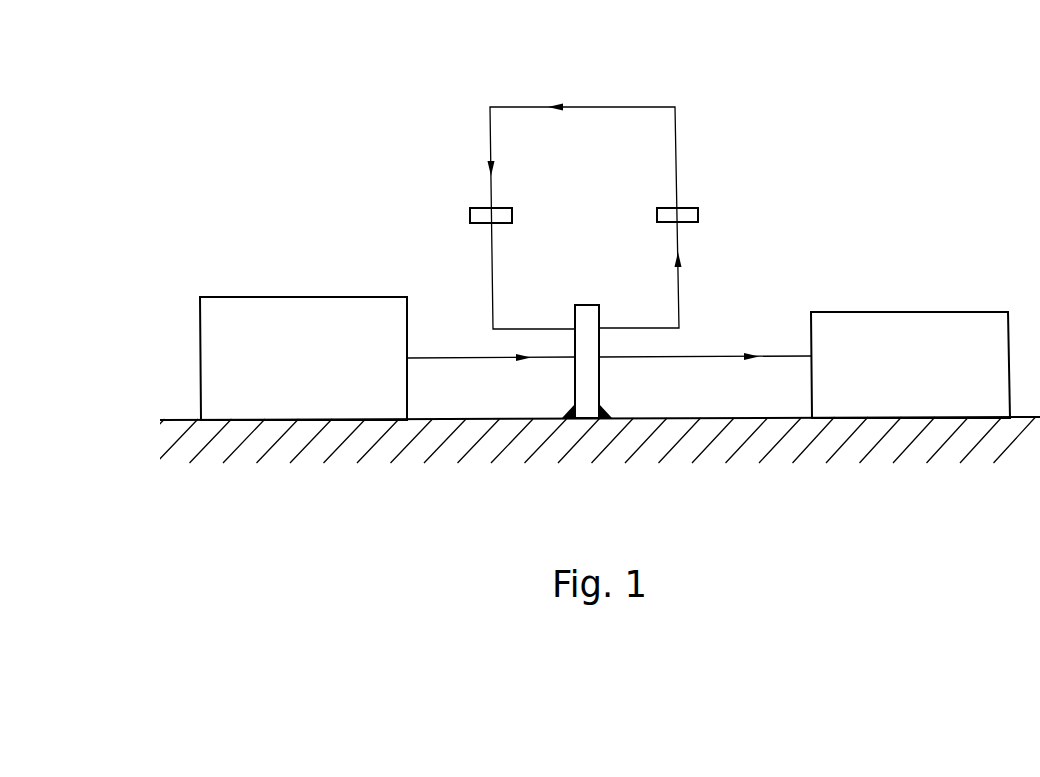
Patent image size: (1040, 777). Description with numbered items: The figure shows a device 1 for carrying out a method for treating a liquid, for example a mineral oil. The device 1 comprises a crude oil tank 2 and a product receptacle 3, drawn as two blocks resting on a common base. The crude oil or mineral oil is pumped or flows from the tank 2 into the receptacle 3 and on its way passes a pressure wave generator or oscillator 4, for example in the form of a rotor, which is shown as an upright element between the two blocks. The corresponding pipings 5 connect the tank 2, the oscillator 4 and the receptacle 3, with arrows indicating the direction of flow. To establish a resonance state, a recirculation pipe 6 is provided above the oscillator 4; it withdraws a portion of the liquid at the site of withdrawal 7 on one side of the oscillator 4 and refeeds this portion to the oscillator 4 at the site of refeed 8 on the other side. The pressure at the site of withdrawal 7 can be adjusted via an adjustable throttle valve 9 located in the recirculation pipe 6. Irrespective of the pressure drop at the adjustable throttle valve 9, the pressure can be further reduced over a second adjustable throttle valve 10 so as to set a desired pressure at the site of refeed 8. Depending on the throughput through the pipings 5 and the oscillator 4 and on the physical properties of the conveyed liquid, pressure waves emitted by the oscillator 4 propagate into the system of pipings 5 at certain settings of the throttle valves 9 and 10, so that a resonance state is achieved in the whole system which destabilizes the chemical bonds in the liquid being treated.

The device 1 is at (283, 110).
The crude oil tank 2 is at (255, 327).
The product receptacle 3 is at (940, 340).
The oscillator 4 is at (588, 373).
The pipings 5 is at (479, 357).
The recirculation pipe 6 is at (601, 107).
The site of withdrawal 7 is at (617, 282).
The site of refeed 8 is at (552, 282).
The adjustable throttle valve 9 is at (687, 213).
The adjustable throttle valve 10 is at (481, 213).